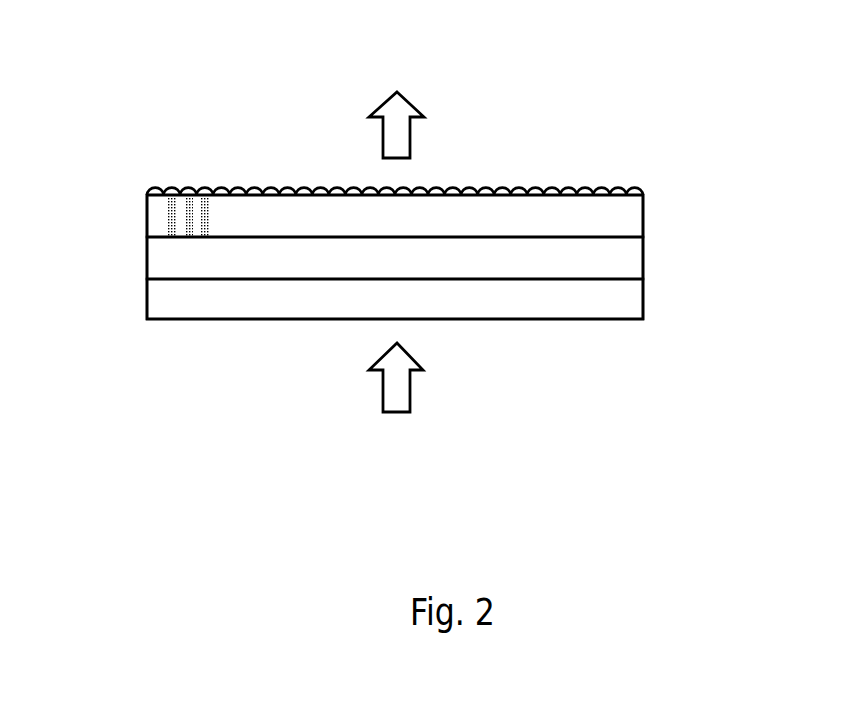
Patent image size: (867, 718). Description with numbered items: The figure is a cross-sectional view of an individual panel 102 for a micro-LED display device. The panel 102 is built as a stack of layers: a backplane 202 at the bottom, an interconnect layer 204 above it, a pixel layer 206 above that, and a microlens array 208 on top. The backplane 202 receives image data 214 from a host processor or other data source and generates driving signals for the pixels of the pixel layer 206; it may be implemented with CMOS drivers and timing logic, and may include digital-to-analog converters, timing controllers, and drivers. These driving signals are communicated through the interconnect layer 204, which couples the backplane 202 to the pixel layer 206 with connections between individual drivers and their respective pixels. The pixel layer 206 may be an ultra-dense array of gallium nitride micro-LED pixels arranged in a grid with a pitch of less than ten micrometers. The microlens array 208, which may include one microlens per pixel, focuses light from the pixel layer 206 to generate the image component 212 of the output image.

The panel 102 is at (148, 121).
The backplane 202 is at (643, 297).
The interconnect layer 204 is at (147, 268).
The pixel layer 206 is at (643, 215).
The microlens array 208 is at (545, 170).
The image component 212 is at (396, 103).
The image data 214 is at (397, 402).